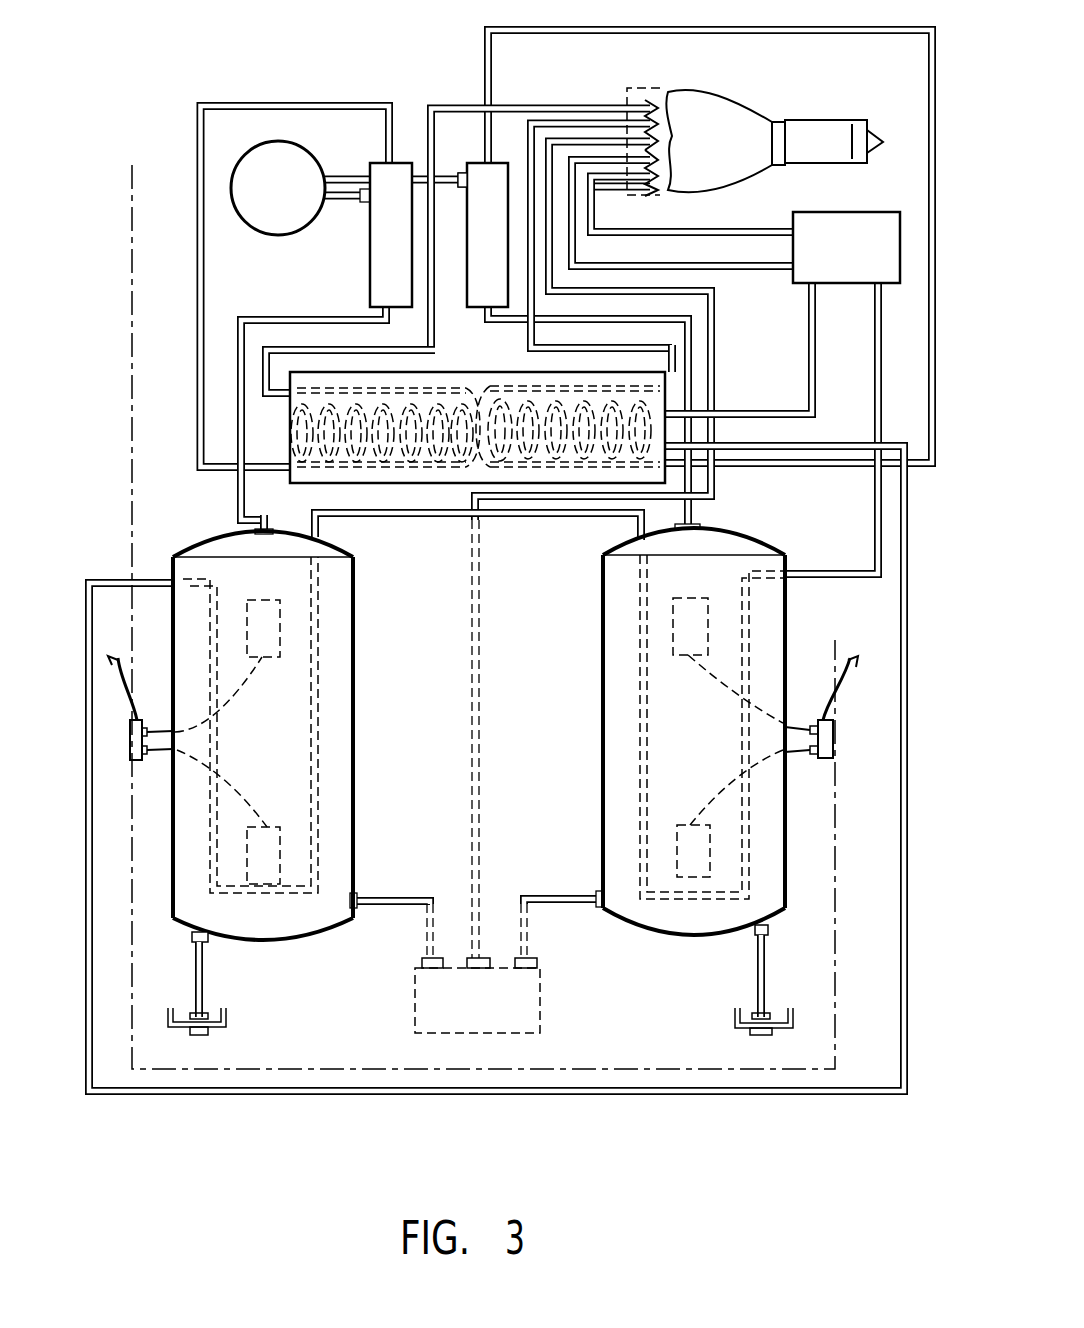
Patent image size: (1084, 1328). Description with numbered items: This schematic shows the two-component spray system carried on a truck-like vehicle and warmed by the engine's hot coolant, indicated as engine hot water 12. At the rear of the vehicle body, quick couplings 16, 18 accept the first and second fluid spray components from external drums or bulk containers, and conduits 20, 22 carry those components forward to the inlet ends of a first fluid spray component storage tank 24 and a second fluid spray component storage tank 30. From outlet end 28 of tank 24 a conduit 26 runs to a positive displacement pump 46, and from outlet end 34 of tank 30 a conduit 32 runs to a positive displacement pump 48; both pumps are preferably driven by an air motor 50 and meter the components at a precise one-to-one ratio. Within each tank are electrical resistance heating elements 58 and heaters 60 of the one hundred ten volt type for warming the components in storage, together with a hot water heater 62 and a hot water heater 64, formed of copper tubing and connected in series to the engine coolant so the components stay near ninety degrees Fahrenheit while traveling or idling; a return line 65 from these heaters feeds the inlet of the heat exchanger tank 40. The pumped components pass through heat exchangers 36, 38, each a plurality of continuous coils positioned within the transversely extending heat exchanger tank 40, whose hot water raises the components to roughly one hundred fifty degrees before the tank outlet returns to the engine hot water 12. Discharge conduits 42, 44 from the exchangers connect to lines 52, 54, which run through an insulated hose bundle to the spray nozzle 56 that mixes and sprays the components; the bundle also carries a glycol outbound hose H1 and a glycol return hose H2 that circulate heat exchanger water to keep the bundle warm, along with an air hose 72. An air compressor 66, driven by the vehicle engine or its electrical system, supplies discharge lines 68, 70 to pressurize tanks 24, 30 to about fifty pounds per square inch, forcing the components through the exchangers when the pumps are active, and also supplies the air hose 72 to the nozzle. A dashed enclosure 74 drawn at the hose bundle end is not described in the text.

The engine hot water 12 is at (866, 262).
The quick coupling 16 is at (173, 1027).
The quick coupling 18 is at (733, 1023).
The conduit 20 is at (195, 983).
The conduit 22 is at (755, 955).
The first fluid spray component storage tank 24 is at (352, 597).
The conduit 26 is at (235, 491).
The outlet end 28 is at (257, 531).
The second fluid spray component storage tank 30 is at (603, 755).
The conduit 32 is at (692, 513).
The outlet end 34 is at (700, 527).
The heat exchanger 36 is at (342, 470).
The heat exchanger 38 is at (577, 470).
The heat exchanger tank 40 is at (515, 370).
The discharge conduit 42 is at (278, 397).
The discharge conduit 44 is at (670, 360).
The positive displacement pump 46 is at (402, 268).
The positive displacement pump 48 is at (499, 268).
The air motor 50 is at (288, 204).
The line 52 is at (565, 103).
The line 54 is at (542, 121).
The spray nozzle 56 is at (810, 130).
The electrical resistance heating element 58 is at (273, 620).
The electrical resistance heater 60 is at (693, 623).
The hot water heater 62 is at (315, 737).
The hot water heater 64 is at (748, 642).
The return line 65 is at (83, 813).
The air compressor 66 is at (483, 1017).
The discharge line 68 is at (385, 897).
The discharge line 70 is at (542, 896).
The air hose 72 is at (590, 145).
The heater block 74 is at (650, 88).
The glycol outbound hose H1 is at (650, 160).
The glycol return hose H2 is at (635, 183).